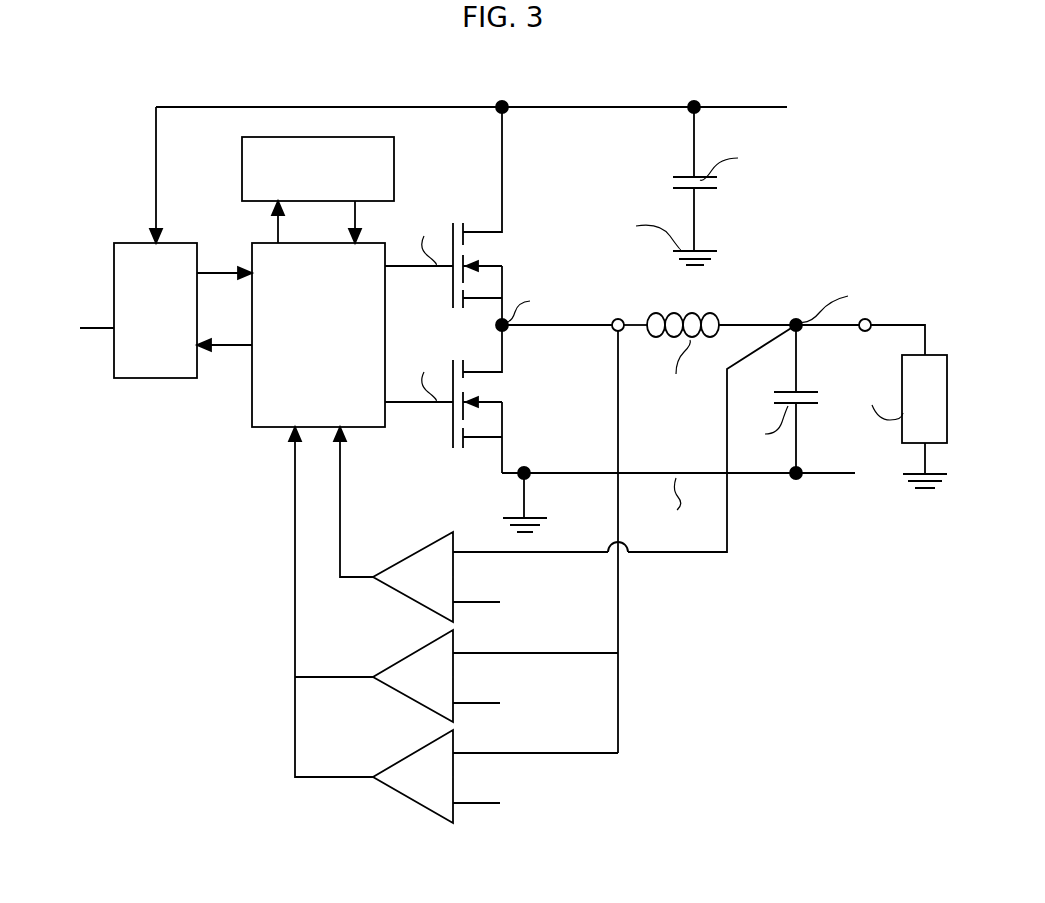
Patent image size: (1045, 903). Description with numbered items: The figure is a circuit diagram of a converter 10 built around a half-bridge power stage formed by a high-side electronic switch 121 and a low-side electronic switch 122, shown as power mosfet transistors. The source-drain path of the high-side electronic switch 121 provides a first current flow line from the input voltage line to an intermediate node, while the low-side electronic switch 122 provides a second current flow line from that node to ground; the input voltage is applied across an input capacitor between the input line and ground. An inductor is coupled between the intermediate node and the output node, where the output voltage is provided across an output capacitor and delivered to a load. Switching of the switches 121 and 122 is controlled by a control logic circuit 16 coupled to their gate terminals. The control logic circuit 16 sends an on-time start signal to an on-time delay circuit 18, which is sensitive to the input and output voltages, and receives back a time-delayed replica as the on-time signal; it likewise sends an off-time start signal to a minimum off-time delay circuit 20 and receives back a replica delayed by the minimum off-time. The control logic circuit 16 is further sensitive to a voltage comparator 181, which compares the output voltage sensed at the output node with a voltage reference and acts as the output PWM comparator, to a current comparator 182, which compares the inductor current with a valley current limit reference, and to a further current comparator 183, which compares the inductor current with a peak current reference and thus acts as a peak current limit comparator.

The converter 10 is at (851, 187).
The control logic circuit 16 is at (263, 432).
The on-time delay circuit 18 is at (152, 381).
The minimum off-time delay circuit 20 is at (393, 156).
The high-side electronic switch 121 is at (510, 248).
The low-side electronic switch 122 is at (442, 433).
The voltage comparator 181 is at (408, 596).
The current comparator 182 is at (408, 700).
The current comparator 183 is at (408, 800).